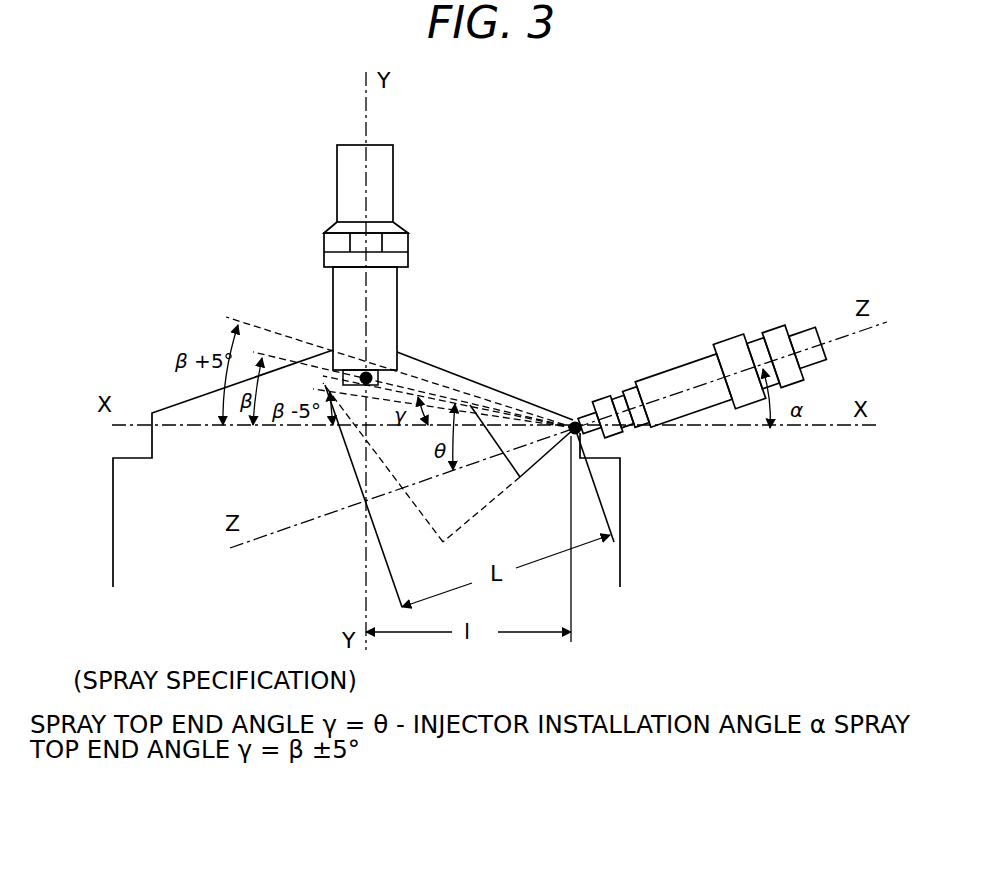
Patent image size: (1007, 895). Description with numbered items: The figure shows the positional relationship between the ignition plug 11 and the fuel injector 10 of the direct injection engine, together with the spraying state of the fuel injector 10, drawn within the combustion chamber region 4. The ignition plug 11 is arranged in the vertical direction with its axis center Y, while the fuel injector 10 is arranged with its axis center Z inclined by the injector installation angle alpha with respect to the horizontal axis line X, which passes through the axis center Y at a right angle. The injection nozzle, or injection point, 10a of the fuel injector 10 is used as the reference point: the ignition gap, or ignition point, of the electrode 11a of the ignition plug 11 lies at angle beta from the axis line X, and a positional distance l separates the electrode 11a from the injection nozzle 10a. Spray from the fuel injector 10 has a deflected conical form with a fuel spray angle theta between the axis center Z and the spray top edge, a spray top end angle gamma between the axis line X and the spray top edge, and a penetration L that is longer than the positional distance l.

The cylinder head / combustion chamber 4 is at (113, 516).
The fuel injector 10 is at (670, 378).
The injection nozzle (injection point) 10a is at (579, 436).
The ignition plug 11 is at (408, 262).
The electrode 11a is at (378, 378).